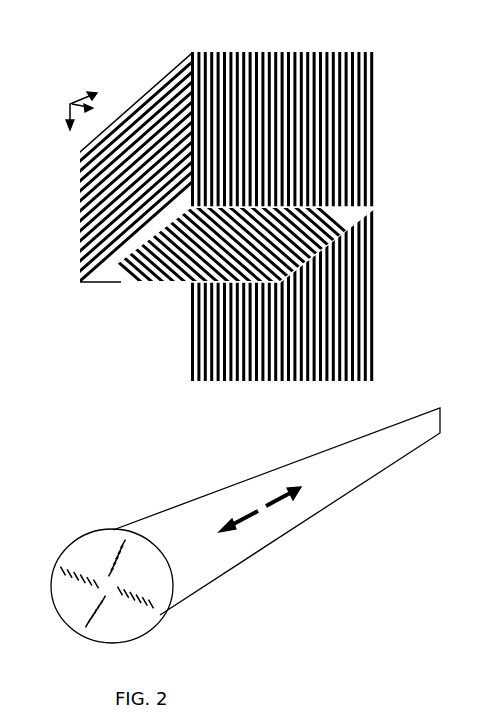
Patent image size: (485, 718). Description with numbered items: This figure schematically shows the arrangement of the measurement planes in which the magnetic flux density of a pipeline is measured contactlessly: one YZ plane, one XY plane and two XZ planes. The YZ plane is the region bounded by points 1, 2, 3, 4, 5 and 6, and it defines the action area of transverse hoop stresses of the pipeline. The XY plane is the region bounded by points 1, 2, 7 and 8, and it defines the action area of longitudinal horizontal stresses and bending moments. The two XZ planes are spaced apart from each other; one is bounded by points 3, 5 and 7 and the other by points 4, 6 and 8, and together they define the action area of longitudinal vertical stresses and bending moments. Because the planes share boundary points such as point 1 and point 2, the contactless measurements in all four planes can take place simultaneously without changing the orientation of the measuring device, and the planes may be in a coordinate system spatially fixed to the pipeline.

The point 1 is at (272, 263).
The point 2 is at (124, 174).
The point 3 is at (295, 336).
The point 4 is at (179, 336).
The point 5 is at (296, 125).
The point 6 is at (179, 118).
The point 7 is at (337, 239).
The point 8 is at (113, 273).